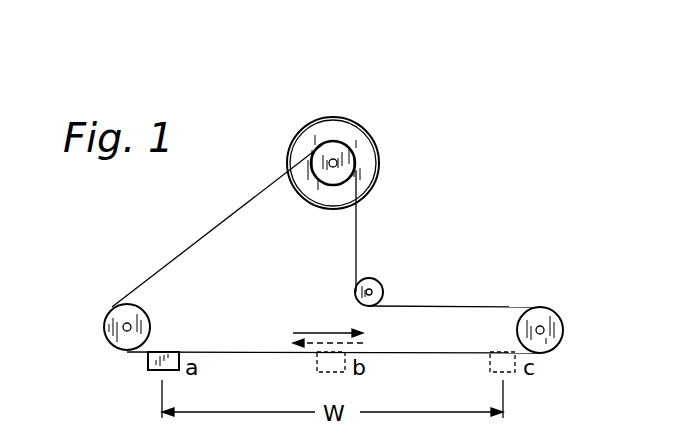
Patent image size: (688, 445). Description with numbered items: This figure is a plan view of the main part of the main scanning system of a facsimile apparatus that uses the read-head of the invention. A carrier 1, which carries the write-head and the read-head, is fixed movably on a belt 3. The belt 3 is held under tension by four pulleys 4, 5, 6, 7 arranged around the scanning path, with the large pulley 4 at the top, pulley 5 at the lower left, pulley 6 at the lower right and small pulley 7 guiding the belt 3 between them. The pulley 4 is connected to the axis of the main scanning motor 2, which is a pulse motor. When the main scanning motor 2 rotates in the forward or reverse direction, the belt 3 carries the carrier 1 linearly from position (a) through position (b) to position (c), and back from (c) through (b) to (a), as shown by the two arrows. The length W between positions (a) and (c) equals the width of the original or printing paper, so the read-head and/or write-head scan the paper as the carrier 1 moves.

The carrier 1 is at (148, 362).
The main scanning motor 2 is at (372, 135).
The belt 3 is at (356, 232).
The pulley 4 is at (355, 160).
The pulley 5 is at (110, 312).
The pulley 6 is at (552, 312).
The pulley 7 is at (383, 285).